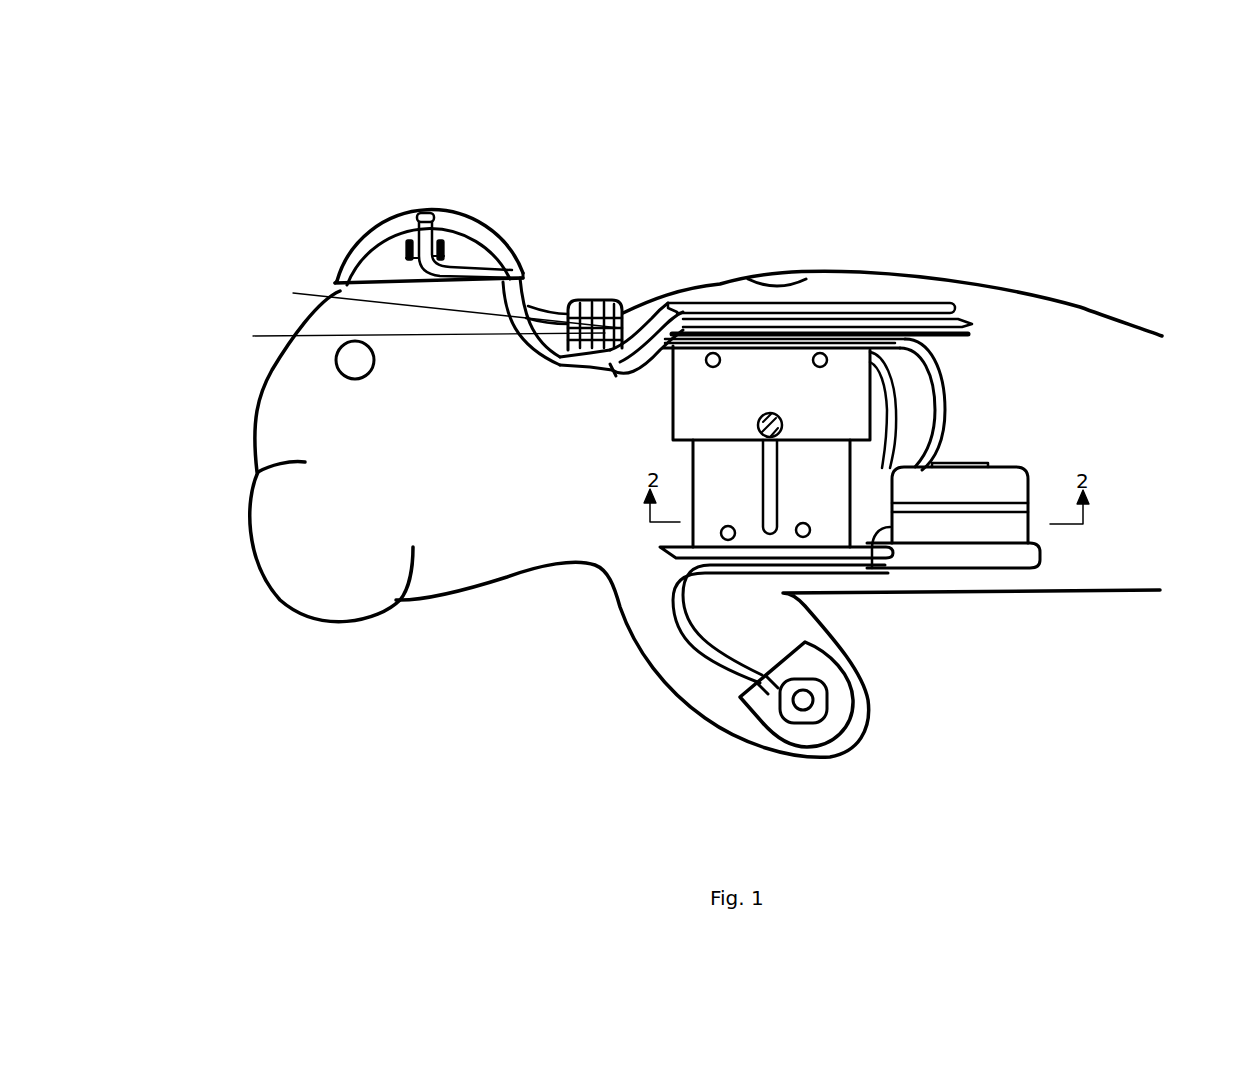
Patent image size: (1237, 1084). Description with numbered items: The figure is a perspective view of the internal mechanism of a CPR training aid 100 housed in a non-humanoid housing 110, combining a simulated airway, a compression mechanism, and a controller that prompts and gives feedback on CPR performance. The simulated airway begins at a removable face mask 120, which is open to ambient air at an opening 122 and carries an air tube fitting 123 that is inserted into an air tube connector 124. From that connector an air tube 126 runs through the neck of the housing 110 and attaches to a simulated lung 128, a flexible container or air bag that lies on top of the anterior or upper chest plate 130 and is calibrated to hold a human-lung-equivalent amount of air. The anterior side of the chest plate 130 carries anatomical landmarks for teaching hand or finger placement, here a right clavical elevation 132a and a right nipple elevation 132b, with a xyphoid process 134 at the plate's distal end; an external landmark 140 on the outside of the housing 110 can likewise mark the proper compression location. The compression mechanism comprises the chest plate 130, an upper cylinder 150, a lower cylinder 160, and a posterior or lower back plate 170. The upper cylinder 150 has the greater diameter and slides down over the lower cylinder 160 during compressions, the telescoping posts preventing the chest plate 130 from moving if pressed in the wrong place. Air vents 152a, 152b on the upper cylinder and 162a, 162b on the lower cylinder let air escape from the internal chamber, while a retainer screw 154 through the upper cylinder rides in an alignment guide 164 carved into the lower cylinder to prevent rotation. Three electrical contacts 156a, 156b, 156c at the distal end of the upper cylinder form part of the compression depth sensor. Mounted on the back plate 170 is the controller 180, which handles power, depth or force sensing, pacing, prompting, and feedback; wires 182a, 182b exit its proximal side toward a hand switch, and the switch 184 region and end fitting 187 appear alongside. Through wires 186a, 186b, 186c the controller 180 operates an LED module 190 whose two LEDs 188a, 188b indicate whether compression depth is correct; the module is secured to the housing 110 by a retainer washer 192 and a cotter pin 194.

The CPR training aid 100 is at (290, 116).
The non-humanoid housing 110 is at (340, 538).
The removable face mask 120 is at (372, 270).
The opening 122 is at (422, 212).
The air tube fitting 123 is at (437, 232).
The air tube connector 124 is at (406, 248).
The air tube 126 is at (505, 266).
The simulated lung 128 is at (885, 313).
The anterior or upper chest plate 130 is at (935, 330).
The right clavical elevation 132a is at (721, 317).
The right nipple elevation 132b is at (790, 312).
The xyphoid process 134 is at (973, 320).
The external landmark 140 is at (772, 292).
The upper cylinder 150 is at (717, 423).
The air vent 152a is at (705, 352).
The air vent 152b is at (822, 352).
The retainer screw 154 is at (782, 424).
The electrical contact 156a is at (920, 352).
The electrical contact 156b is at (860, 370).
The electrical contact 156c is at (872, 390).
The lower cylinder 160 is at (680, 553).
The air vent 162a is at (720, 536).
The air vent 162b is at (787, 531).
The alignment guide 164 is at (812, 540).
The posterior or lower back plate 170 is at (1027, 567).
The controller 180 is at (967, 530).
The wire 182a is at (733, 677).
The wire 182b is at (748, 656).
The strap anchor plate 184 is at (815, 718).
The wire 186a is at (517, 353).
The wire 186b is at (560, 370).
The wire 186c is at (592, 368).
The end fitting 187 is at (633, 372).
The LED 188a is at (580, 298).
The LED 188b is at (606, 300).
The LED module 190 is at (602, 270).
The retainer washer 192 is at (428, 305).
The cotter pin 194 is at (402, 340).